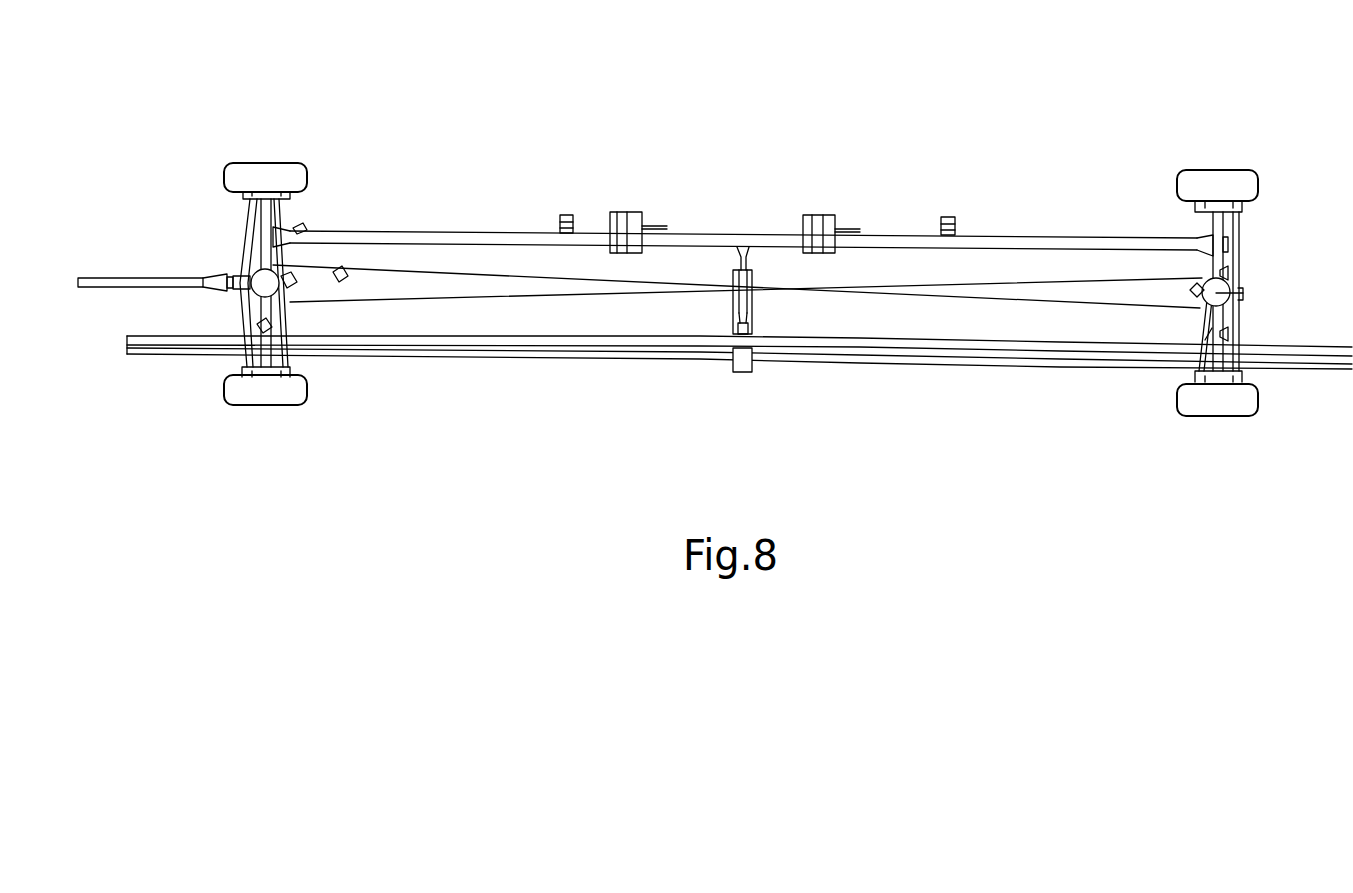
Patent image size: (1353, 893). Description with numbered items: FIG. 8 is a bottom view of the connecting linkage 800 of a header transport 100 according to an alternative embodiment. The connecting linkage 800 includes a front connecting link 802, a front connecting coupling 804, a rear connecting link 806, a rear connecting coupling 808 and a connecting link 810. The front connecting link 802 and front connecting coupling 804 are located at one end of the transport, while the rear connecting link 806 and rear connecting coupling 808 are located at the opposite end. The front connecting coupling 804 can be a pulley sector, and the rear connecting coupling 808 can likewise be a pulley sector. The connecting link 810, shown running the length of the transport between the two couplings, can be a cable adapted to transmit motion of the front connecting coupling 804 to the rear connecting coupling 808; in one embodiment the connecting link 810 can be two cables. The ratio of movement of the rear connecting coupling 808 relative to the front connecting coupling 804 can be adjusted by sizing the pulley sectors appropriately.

The vehicle 100 is at (629, 141).
The connecting linkage 800 is at (702, 268).
The front connecting link 802 is at (290, 343).
The front connecting coupling 804 is at (260, 281).
The rear connecting link 806 is at (1197, 355).
The rear connecting coupling 808 is at (1243, 293).
The connecting link 810 is at (807, 290).